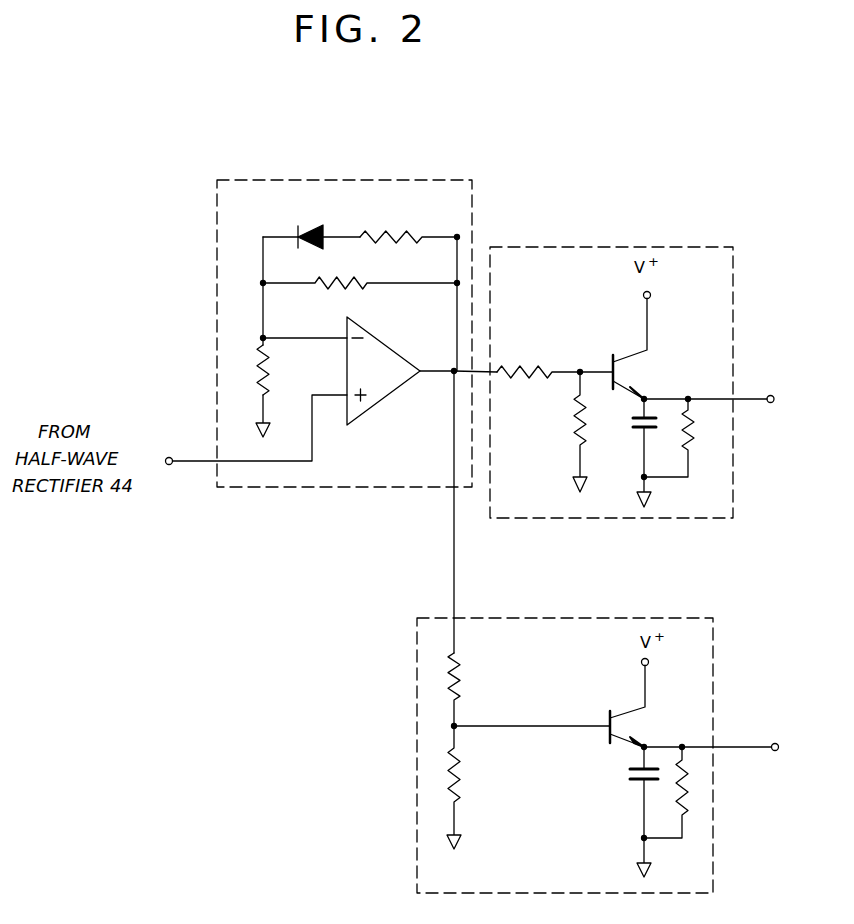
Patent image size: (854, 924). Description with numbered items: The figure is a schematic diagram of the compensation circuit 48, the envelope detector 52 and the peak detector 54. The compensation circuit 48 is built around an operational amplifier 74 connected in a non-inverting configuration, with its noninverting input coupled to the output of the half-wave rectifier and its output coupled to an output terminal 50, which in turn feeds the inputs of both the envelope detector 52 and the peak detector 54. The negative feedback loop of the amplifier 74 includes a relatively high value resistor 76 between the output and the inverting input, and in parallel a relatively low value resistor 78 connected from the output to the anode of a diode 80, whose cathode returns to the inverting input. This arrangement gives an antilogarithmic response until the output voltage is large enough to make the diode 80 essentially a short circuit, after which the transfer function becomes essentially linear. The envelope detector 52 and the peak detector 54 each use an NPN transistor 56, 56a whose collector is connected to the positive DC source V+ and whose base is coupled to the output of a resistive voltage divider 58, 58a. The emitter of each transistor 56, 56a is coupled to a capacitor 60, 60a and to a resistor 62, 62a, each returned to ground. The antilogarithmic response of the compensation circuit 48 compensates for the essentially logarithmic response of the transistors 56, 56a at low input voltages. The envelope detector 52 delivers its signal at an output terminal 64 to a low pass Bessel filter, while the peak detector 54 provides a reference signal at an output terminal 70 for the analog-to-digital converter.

The compensation circuit 48 is at (356, 180).
The output terminal 50 is at (454, 369).
The envelope detector 52 is at (730, 247).
The peak detector 54 is at (600, 618).
The NPN transistor 56 is at (607, 356).
The NPN transistor 56a is at (606, 714).
The resistive voltage divider 58 is at (540, 354).
The resistive voltage divider 58a is at (520, 666).
The capacitor 60 is at (634, 427).
The capacitor 60a is at (630, 772).
The resistor 62 is at (694, 440).
The resistor 62a is at (688, 800).
The output terminal 64 is at (727, 407).
The output terminal 70 is at (729, 758).
The operational amplifier 74 is at (384, 383).
The resistor 76 is at (365, 288).
The resistor 78 is at (388, 234).
The diode 80 is at (313, 230).